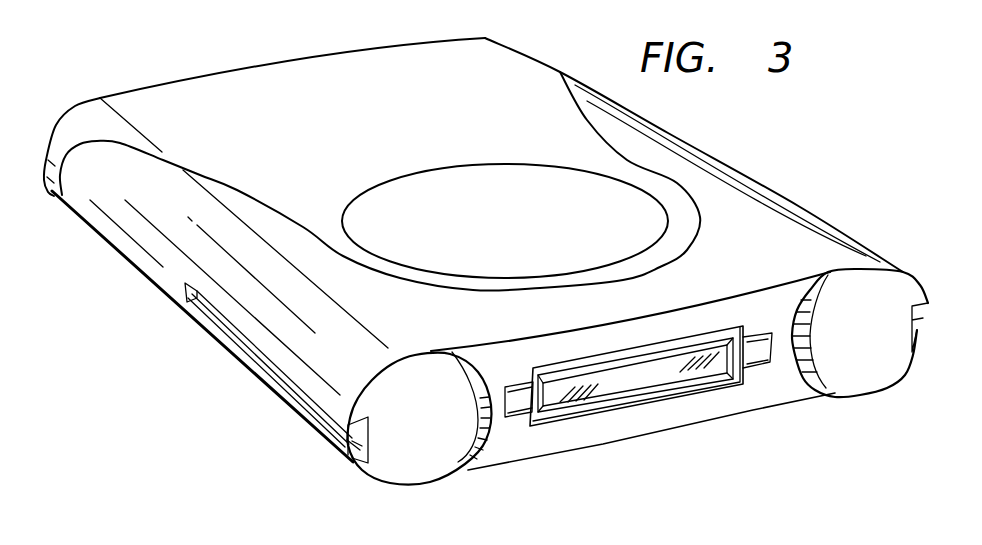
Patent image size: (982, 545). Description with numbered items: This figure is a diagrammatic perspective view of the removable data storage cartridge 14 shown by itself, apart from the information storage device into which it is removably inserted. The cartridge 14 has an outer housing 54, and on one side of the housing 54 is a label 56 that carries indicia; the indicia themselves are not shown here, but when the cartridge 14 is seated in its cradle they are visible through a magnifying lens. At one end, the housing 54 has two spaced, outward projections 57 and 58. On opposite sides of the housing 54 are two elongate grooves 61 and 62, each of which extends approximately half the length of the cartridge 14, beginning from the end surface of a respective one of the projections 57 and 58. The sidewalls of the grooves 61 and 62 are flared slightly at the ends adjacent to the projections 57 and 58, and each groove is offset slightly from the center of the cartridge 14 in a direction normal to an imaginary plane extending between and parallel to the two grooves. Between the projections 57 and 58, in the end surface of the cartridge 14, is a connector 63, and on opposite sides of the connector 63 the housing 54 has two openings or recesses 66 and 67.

The cartridge 14 is at (287, 60).
The outer housing 54 is at (212, 83).
The label 56 is at (412, 183).
The projection 57 is at (412, 466).
The projection 58 is at (855, 375).
The elongate groove 61 is at (357, 443).
The elongate groove 62 is at (918, 328).
The connector 63 is at (625, 387).
The opening or recess 66 is at (507, 398).
The opening or recess 67 is at (748, 360).